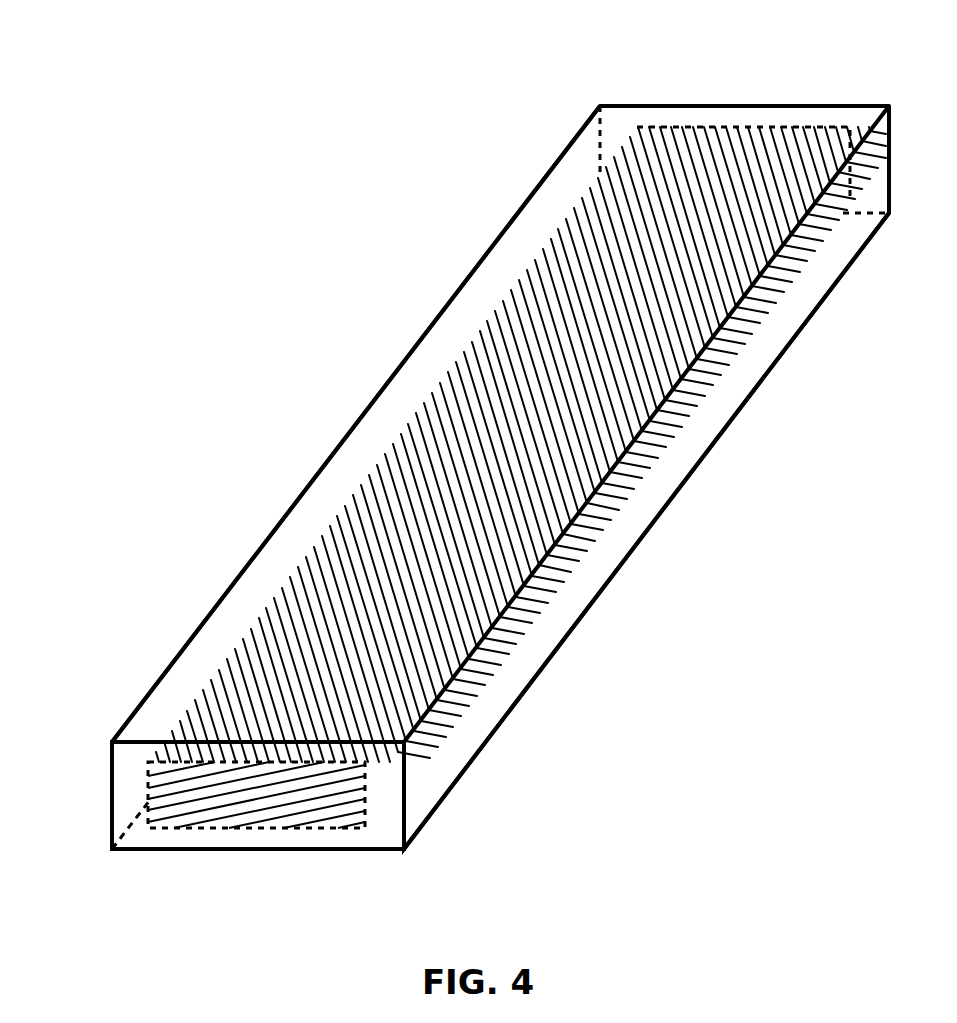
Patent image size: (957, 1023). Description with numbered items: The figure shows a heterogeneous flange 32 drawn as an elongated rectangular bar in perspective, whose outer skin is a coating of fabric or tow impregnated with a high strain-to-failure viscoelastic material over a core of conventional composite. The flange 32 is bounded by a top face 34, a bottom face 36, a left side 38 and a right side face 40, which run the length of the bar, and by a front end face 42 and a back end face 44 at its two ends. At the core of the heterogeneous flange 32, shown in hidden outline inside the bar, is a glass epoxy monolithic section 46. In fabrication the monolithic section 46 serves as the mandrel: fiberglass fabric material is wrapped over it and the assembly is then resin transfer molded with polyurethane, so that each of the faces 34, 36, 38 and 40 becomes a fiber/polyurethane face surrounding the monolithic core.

The heterogeneous flange 32 is at (282, 357).
The top face 34 is at (462, 323).
The bottom face 36 is at (277, 838).
The left side 38 is at (246, 605).
The right side face 40 is at (578, 582).
The front end face 42 is at (130, 802).
The back end face 44 is at (621, 128).
The glass epoxy monolithic section 46 is at (233, 798).